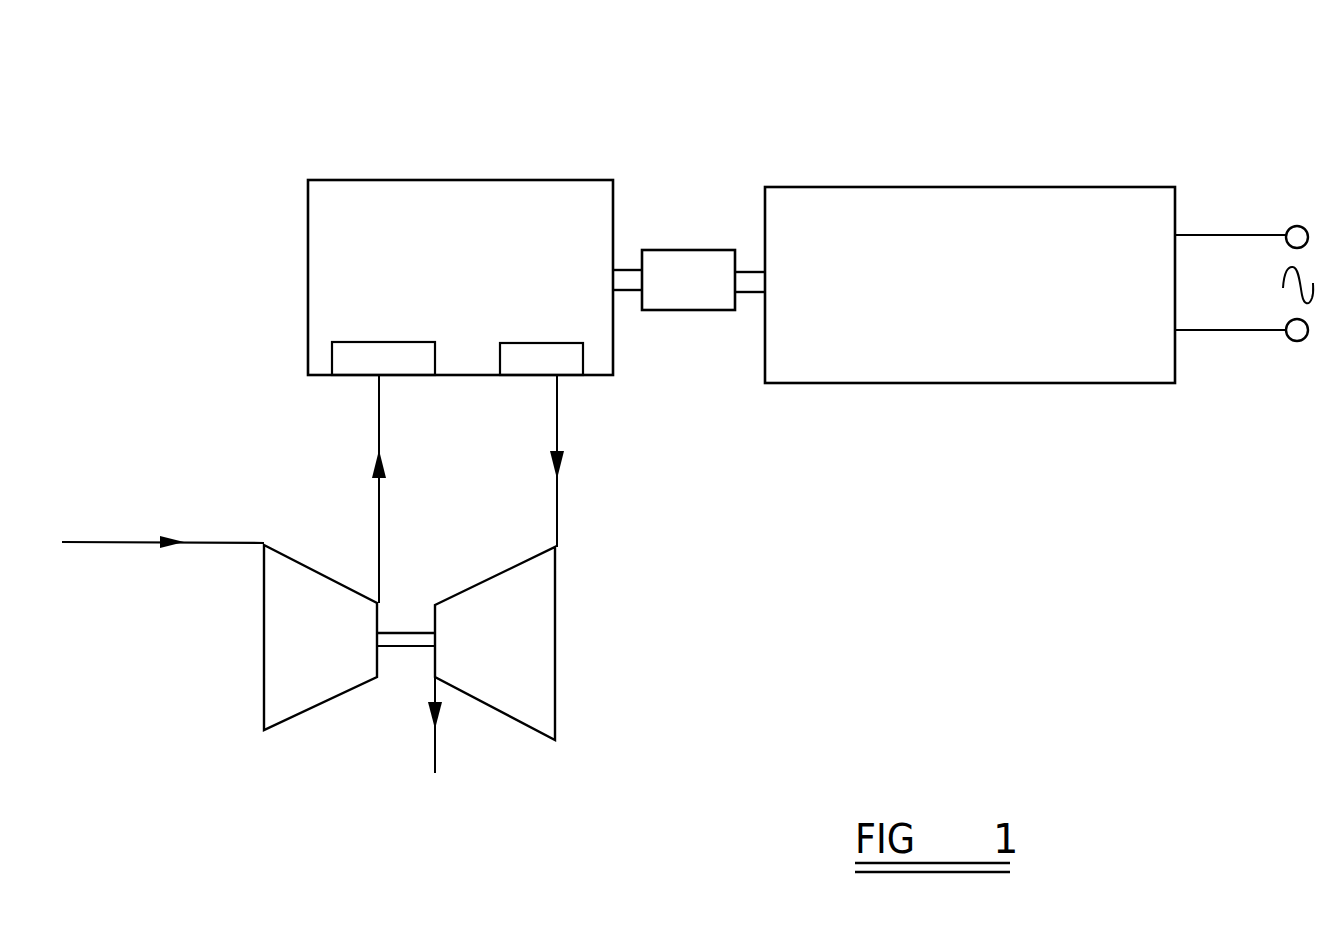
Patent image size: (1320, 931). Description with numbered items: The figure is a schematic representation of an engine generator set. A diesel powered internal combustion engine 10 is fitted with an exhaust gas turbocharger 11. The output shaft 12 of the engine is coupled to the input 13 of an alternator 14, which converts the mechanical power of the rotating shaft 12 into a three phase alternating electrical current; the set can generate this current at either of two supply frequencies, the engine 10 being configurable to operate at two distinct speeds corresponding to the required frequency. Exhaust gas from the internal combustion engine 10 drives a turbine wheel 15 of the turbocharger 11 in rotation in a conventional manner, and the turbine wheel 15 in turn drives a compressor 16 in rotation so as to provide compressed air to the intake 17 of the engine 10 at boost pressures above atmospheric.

The internal combustion engine 10 is at (415, 277).
The exhaust gas turbocharger 11 is at (419, 543).
The output shaft 12 is at (628, 242).
The input 13 is at (753, 297).
The alternator 14 is at (1015, 284).
The turbine wheel 15 is at (555, 650).
The compressor 16 is at (264, 657).
The intake 17 is at (340, 360).